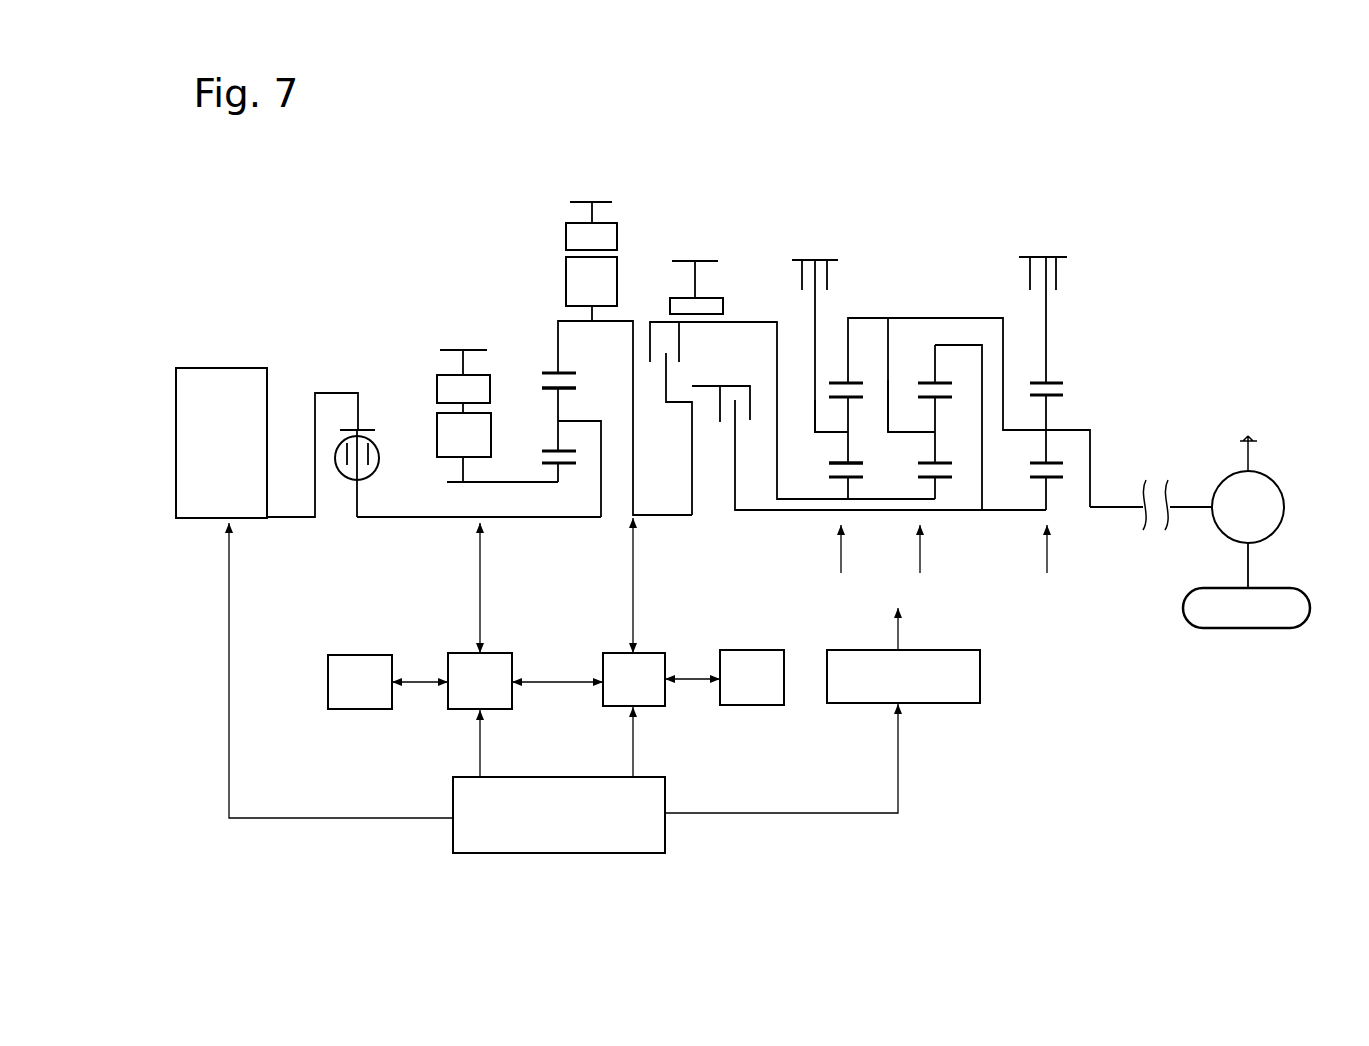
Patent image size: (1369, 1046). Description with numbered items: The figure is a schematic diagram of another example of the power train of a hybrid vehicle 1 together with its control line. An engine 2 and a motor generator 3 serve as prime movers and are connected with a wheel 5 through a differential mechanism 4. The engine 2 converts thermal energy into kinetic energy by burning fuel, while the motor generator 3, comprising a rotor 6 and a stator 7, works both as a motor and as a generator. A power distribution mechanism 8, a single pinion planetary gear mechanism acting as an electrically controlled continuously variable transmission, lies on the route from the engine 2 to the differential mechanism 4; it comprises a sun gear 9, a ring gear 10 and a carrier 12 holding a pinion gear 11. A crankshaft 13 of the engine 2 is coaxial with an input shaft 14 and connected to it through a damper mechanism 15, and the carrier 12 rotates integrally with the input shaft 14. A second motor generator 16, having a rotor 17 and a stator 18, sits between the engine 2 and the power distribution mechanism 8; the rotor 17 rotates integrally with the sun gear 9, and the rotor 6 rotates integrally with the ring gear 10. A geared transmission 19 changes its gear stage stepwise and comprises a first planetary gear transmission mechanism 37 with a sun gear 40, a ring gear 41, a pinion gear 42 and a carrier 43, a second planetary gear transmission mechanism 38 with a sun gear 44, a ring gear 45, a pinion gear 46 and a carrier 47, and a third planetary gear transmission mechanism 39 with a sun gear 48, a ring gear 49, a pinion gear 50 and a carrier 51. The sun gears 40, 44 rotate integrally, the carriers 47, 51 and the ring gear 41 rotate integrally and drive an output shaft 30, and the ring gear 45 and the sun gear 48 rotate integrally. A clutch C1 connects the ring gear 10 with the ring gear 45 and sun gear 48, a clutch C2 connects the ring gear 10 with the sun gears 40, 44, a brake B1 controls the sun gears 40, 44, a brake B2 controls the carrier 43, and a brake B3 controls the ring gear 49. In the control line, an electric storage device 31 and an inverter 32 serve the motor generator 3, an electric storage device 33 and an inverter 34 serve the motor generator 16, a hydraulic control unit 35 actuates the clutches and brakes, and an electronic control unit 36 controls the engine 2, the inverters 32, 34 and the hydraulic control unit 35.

The vehicle 1 is at (330, 238).
The engine 2 is at (222, 368).
The motor generator 3 is at (553, 250).
The differential mechanism 4 is at (1284, 505).
The wheel 5 is at (1247, 628).
The rotor 6 is at (617, 284).
The stator 7 is at (617, 236).
The power distribution mechanism 8 is at (533, 343).
The sun gear 9 is at (548, 462).
The ring gear 10 is at (570, 386).
The pinion gear 11 is at (547, 386).
The carrier 12 is at (585, 421).
The crankshaft 13 is at (290, 518).
The input shaft 14 is at (514, 518).
The damper mechanism 15 is at (352, 484).
The motor generator 16 is at (426, 350).
The rotor 17 is at (437, 436).
The stator 18 is at (437, 389).
The transmission 19 is at (887, 292).
The output shaft 30 is at (1120, 507).
The electric storage device 31 is at (752, 650).
The inverter 32 is at (612, 653).
The electric storage device 33 is at (356, 655).
The inverter 34 is at (500, 653).
The hydraulic control unit 35 is at (980, 670).
The electronic control unit 36 is at (665, 800).
The first planetary gear transmission mechanism 37 is at (837, 565).
The second planetary gear transmission mechanism 38 is at (920, 565).
The third planetary gear transmission mechanism 39 is at (1045, 563).
The sun gear 40 is at (858, 470).
The ring gear 41 is at (840, 381).
The pinion gear 42 is at (830, 463).
The carrier 43 is at (818, 437).
The sun gear 44 is at (924, 476).
The ring gear 45 is at (920, 388).
The pinion gear 46 is at (954, 468).
The carrier 47 is at (888, 410).
The sun gear 48 is at (1030, 470).
The ring gear 49 is at (1063, 383).
The pinion gear 50 is at (1063, 395).
The carrier 51 is at (1088, 426).
The brake B1 is at (696, 275).
The brake B2 is at (820, 333).
The brake B3 is at (1043, 371).
The clutch C1 is at (869, 436).
The clutch C2 is at (792, 418).